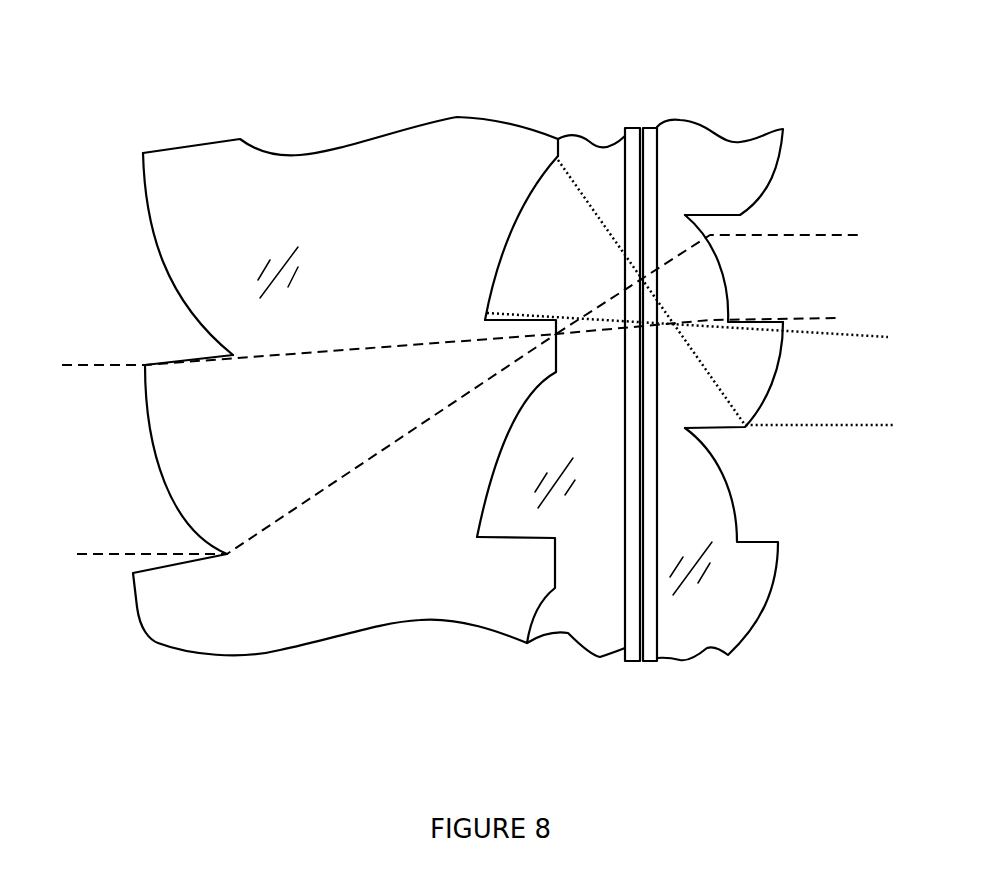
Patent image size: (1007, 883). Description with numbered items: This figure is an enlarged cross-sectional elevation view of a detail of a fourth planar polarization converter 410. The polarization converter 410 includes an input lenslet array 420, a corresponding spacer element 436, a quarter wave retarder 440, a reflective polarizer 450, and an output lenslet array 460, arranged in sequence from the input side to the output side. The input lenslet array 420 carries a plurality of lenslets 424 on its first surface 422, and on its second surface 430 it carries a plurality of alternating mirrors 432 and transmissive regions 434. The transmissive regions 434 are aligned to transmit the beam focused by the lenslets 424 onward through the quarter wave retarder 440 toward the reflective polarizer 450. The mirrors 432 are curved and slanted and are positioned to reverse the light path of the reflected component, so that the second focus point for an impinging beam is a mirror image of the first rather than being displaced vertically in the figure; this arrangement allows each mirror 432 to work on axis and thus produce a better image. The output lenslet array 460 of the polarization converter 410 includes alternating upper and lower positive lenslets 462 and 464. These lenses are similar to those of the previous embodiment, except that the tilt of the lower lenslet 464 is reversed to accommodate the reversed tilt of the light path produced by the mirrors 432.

The polarization converter 410 is at (398, 61).
The input lenslet array 420 is at (316, 378).
The first surface 422 is at (142, 148).
The lenslets 424 is at (177, 303).
The second surface 430 is at (536, 388).
The mirrors 432 is at (530, 182).
The transmissive regions 434 is at (562, 355).
The spacer element 436 is at (568, 630).
The quarter wave retarder 440 is at (632, 665).
The reflective polarizer 450 is at (656, 667).
The output lenslet array 460 is at (735, 437).
The upper positive lenslets 462 is at (735, 295).
The lower positive lenslets 464 is at (775, 392).